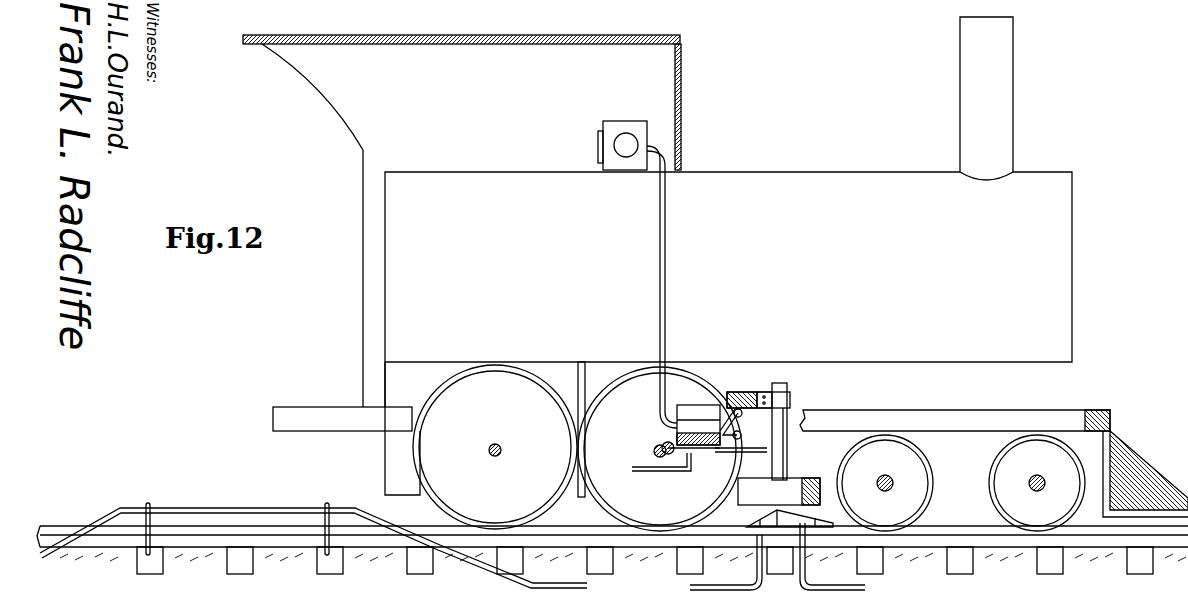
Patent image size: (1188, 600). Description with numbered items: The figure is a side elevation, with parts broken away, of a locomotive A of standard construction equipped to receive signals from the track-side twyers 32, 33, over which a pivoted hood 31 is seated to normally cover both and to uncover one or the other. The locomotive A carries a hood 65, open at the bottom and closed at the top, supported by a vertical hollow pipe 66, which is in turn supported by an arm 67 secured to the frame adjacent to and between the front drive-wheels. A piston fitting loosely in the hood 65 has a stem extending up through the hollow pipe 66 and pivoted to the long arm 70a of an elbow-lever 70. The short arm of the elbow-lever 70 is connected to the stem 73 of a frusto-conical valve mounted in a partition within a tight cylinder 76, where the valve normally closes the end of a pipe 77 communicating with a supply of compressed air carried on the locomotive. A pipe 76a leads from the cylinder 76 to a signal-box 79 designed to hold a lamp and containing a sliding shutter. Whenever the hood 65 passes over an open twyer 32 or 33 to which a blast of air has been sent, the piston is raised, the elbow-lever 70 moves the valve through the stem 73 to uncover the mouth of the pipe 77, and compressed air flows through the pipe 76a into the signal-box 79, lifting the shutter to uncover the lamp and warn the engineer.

The locomotive A is at (728, 212).
The signal-box 79 is at (631, 126).
The pipe 76a is at (651, 287).
The tight cylinder 76 is at (698, 415).
The elbow-lever 70 is at (735, 392).
The arm 67 is at (762, 392).
The long arm of the elbow-lever 70a is at (744, 422).
The vertical hollow pipe 66 is at (791, 431).
The hood 65 is at (822, 478).
The stem of the valve 73 is at (737, 445).
The pipe 77 is at (676, 467).
The hood 31 is at (796, 513).
The twyer 33 is at (726, 562).
The twyer 32 is at (832, 556).